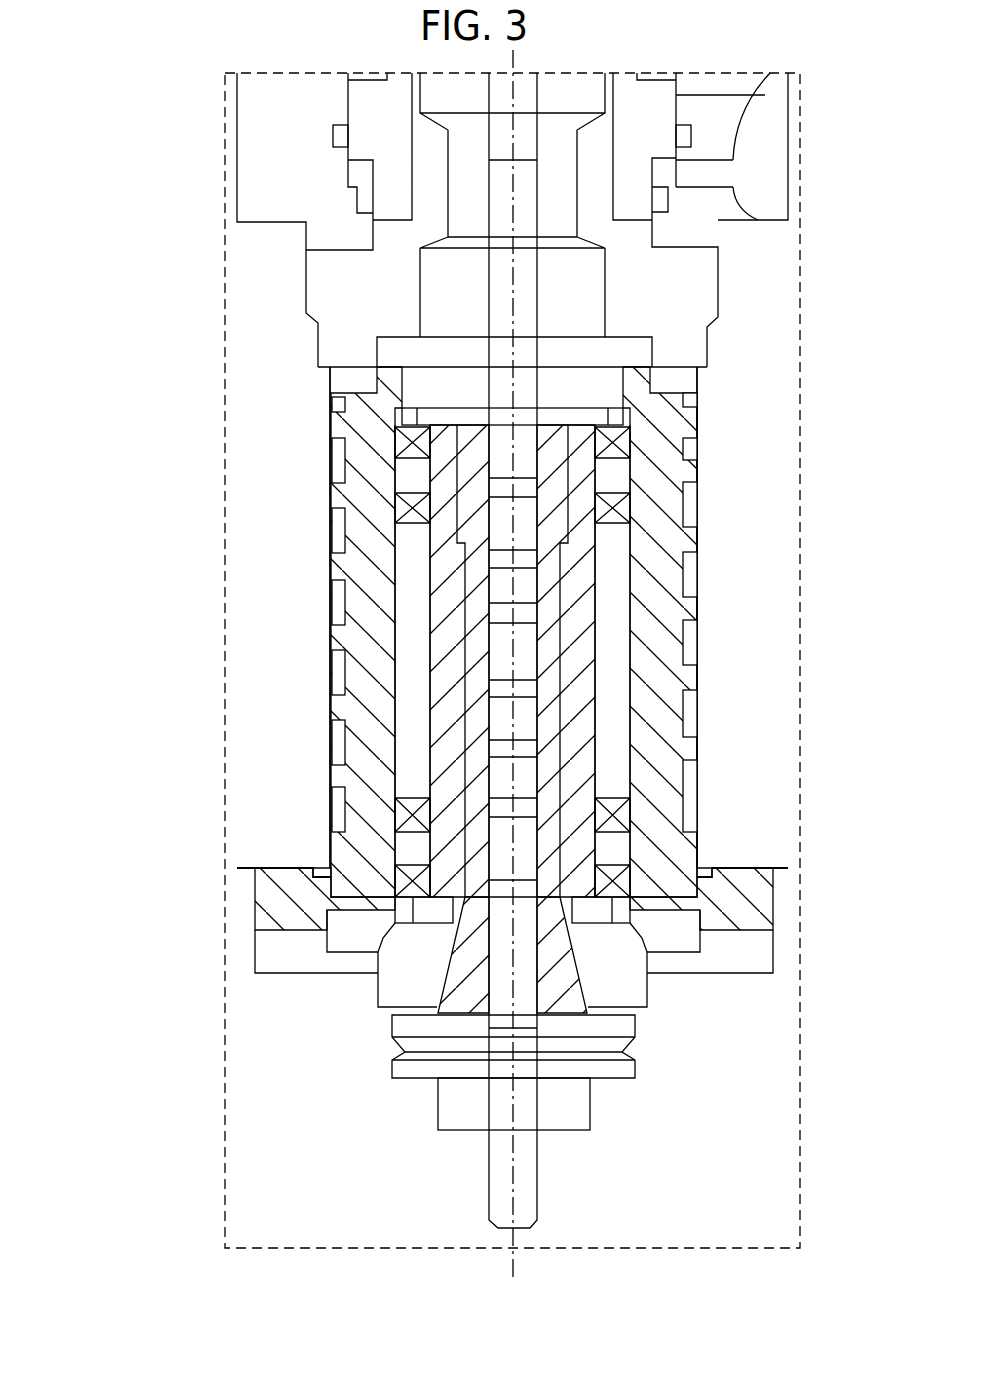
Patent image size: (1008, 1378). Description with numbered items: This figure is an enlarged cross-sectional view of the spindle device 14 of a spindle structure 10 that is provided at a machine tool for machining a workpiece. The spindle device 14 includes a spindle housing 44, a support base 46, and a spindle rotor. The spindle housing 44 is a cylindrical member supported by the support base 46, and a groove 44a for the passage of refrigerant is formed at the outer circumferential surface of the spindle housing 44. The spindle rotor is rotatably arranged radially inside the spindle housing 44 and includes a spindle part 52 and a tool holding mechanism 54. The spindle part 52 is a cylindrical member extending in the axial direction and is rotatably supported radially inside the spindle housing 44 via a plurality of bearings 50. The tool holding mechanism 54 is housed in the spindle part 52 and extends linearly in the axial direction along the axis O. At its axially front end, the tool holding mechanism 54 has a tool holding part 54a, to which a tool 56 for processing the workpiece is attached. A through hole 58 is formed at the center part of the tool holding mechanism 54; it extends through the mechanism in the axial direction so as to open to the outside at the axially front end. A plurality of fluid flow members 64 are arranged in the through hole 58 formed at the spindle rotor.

The spindle structure 10 is at (872, 129).
The spindle device 14 is at (138, 341).
The spindle housing 44 is at (414, 632).
The groove 44a is at (345, 530).
The support base 46 is at (740, 808).
The bearings 50 is at (625, 442).
The spindle part 52 is at (440, 748).
The tool holding mechanism 54 is at (555, 967).
The tool holding part 54a is at (462, 1103).
The tool 56 is at (528, 1178).
The through hole 58 is at (530, 658).
The fluid flow members 64 is at (527, 487).
The axis O is at (513, 1268).